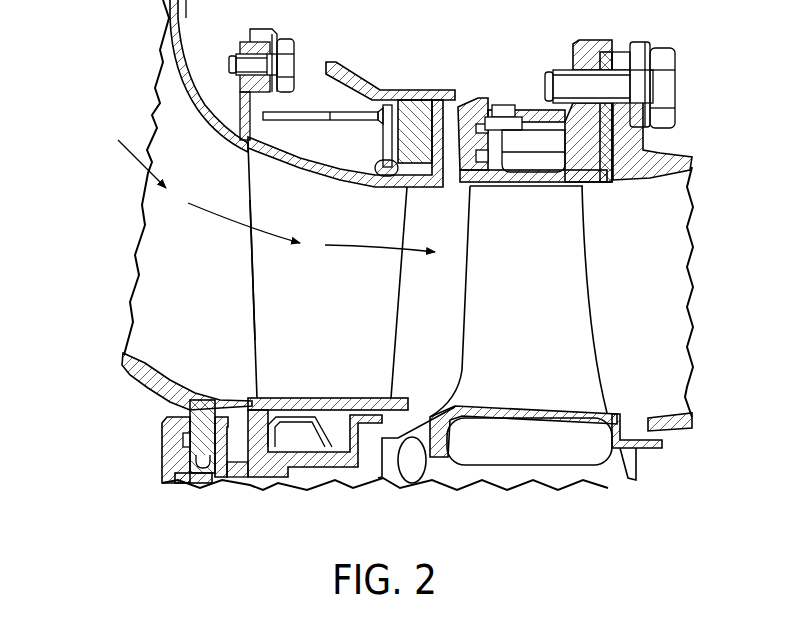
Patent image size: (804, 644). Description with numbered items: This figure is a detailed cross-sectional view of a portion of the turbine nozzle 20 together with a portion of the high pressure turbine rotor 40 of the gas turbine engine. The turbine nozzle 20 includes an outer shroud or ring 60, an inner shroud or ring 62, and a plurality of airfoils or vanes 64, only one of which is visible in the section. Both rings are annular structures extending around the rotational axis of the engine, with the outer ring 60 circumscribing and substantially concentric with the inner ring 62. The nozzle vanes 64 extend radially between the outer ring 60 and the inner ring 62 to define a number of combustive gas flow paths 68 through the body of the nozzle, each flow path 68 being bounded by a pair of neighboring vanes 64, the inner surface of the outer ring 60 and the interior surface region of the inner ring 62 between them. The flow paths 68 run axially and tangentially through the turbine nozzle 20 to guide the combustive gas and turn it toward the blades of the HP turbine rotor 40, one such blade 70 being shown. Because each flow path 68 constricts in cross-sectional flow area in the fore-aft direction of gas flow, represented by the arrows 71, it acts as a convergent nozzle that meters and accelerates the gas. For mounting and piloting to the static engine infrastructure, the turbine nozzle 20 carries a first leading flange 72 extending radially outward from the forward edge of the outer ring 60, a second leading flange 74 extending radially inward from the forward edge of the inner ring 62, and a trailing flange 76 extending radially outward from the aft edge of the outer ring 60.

The turbine nozzle 20 is at (183, 177).
The HP turbine rotor 40 is at (412, 481).
The outer shroud or ring 60 is at (312, 170).
The inner shroud or ring 62 is at (333, 398).
The airfoil or vane 64 is at (257, 330).
The combustive gas flow path 68 is at (302, 276).
The blade 70 is at (580, 287).
The arrows 71 is at (128, 160).
The first leading flange 72 is at (243, 103).
The second leading flange 74 is at (253, 437).
The trailing flange 76 is at (440, 137).